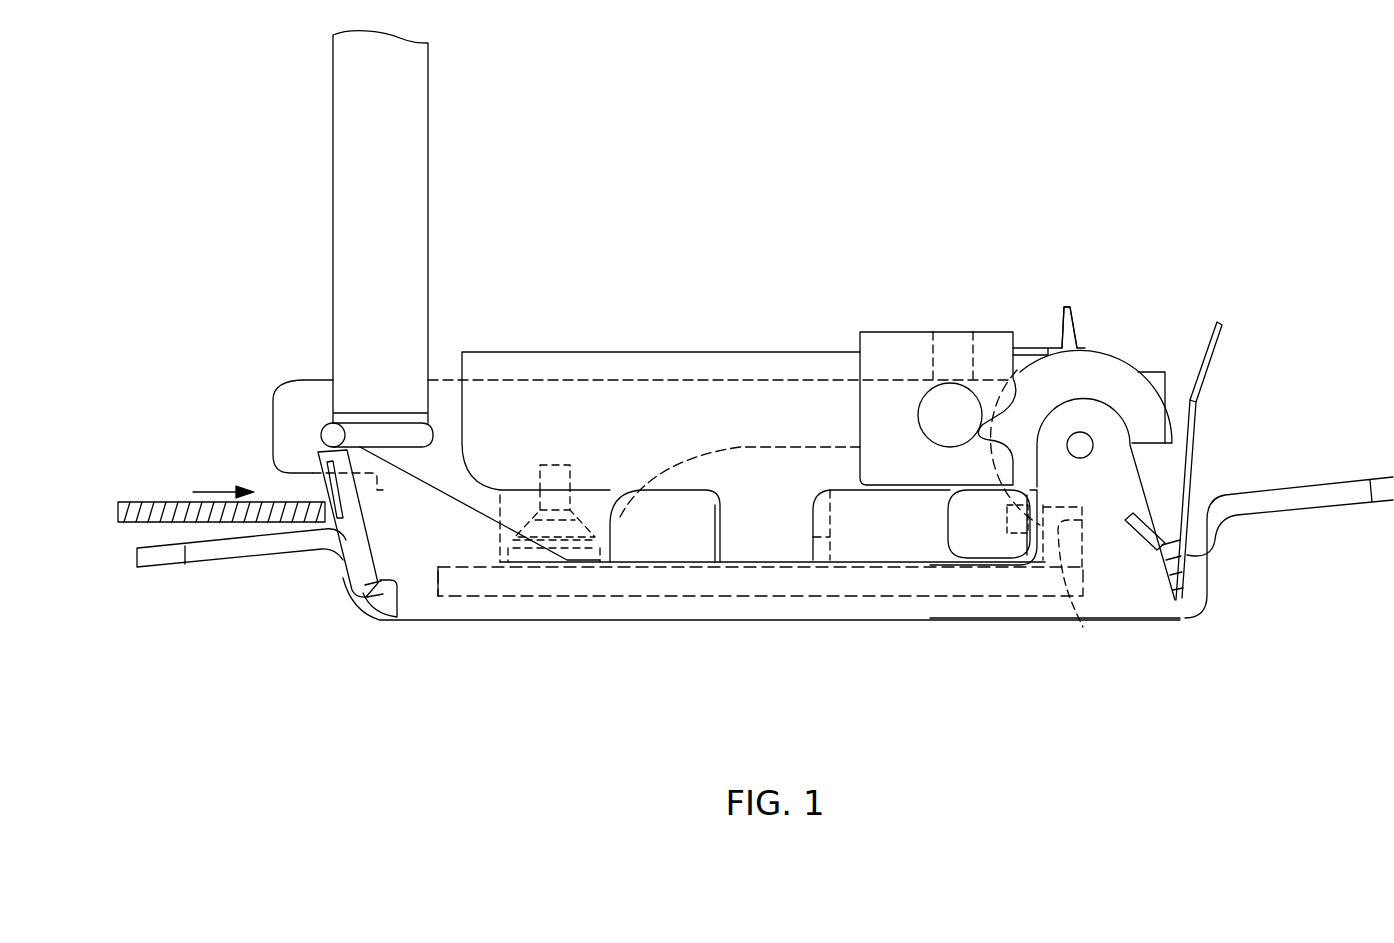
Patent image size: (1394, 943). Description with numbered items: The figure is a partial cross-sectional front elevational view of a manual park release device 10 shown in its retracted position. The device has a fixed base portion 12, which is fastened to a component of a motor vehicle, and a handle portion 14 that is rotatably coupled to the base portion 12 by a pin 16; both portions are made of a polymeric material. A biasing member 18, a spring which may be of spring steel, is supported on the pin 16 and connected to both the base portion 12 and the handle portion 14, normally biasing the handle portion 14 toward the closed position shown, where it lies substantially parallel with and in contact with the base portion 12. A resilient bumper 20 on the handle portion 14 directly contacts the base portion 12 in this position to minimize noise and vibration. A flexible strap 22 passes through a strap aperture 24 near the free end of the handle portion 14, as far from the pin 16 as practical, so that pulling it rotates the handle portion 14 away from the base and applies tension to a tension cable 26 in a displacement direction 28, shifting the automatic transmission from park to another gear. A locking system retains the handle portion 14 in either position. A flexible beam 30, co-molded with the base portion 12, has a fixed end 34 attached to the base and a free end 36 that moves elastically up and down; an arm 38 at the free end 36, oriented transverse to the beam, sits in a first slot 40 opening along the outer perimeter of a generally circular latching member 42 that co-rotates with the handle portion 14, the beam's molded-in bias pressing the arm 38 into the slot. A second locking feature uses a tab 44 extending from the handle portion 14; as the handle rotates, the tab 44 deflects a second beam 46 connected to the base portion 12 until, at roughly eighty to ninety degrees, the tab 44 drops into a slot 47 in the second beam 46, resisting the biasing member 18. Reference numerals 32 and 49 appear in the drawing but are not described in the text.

The manual park release device 10 is at (952, 180).
The base portion 12 is at (407, 549).
The handle portion 14 is at (443, 407).
The pin 16 is at (1090, 456).
The biasing member 18 is at (1227, 542).
The bumper 20 is at (573, 532).
The strap 22 is at (423, 130).
The strap aperture 24 is at (322, 433).
The tension cable 26 is at (157, 505).
The displacement direction 28 is at (210, 490).
The flexible beam 30 is at (628, 575).
The floor 32 is at (1032, 608).
The fixed end 34 is at (460, 597).
The free end 36 is at (953, 587).
The arm 38 is at (1080, 563).
The first slot 40 is at (1075, 600).
The latching member 42 is at (1100, 390).
The tab 44 is at (1067, 310).
The second beam 46 is at (1207, 357).
The slot 47 is at (1197, 433).
The block 49 is at (940, 347).